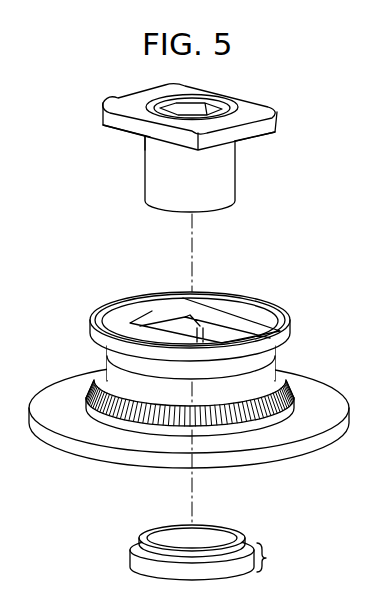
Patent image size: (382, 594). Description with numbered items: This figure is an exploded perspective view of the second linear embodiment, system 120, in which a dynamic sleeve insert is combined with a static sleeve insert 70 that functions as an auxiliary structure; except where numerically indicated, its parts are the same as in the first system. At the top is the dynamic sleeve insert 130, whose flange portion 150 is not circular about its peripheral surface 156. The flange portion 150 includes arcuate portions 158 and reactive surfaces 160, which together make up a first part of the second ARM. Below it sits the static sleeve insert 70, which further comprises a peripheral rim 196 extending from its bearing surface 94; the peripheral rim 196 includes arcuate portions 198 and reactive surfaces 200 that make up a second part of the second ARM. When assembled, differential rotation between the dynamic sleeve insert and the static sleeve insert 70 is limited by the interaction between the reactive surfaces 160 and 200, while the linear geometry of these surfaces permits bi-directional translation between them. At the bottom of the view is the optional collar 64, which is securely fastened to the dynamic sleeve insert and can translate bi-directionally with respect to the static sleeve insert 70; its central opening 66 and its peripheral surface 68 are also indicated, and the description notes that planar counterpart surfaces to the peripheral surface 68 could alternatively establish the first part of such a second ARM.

The collar 64 is at (124, 533).
The central opening of seal ring 66 is at (202, 542).
The peripheral surface 68 is at (267, 558).
The static sleeve insert 70 is at (268, 462).
The bearing surface 94 is at (167, 322).
The system 120 is at (51, 358).
The fastener 130 is at (243, 183).
The flange portion 150 is at (275, 124).
The peripheral surface 156 is at (112, 124).
The arcuate portions 158 is at (252, 138).
The reactive surfaces 160 is at (147, 134).
The peripheral rim 196 is at (258, 304).
The arcuate portions 198 is at (128, 312).
The reactive surfaces 200 is at (218, 312).